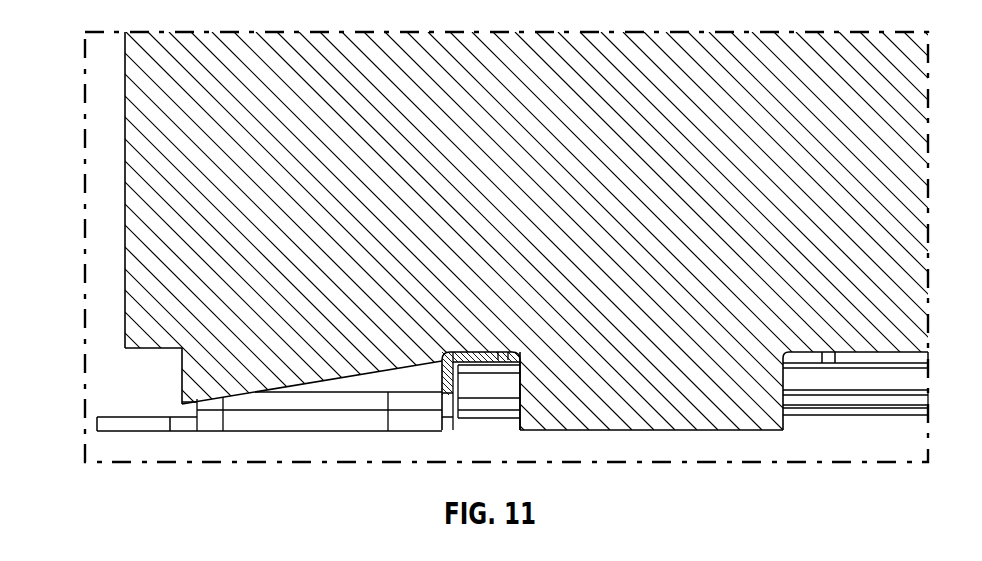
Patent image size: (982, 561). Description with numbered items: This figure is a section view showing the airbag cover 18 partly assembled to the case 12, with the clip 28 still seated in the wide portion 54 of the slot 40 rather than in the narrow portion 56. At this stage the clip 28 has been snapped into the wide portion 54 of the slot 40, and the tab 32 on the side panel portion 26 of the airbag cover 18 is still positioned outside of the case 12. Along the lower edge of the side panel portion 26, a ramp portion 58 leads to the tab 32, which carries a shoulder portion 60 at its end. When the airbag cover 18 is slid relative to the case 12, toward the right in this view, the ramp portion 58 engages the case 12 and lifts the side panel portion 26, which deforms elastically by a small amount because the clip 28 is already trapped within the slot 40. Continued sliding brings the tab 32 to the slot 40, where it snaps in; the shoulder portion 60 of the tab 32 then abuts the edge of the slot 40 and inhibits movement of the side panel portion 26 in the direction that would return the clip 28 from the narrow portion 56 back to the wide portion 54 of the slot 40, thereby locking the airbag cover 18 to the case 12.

The airbag cover 18 is at (124, 200).
The side panel portion 26 is at (124, 257).
The shoulder portion 60 is at (180, 365).
The case 12 is at (145, 427).
The tab 32 is at (185, 402).
The ramp portion 58 is at (223, 400).
The slot 40 is at (500, 360).
The clip 28 is at (665, 430).
The wide portion 54 is at (793, 360).
The narrow portion 56 is at (872, 360).